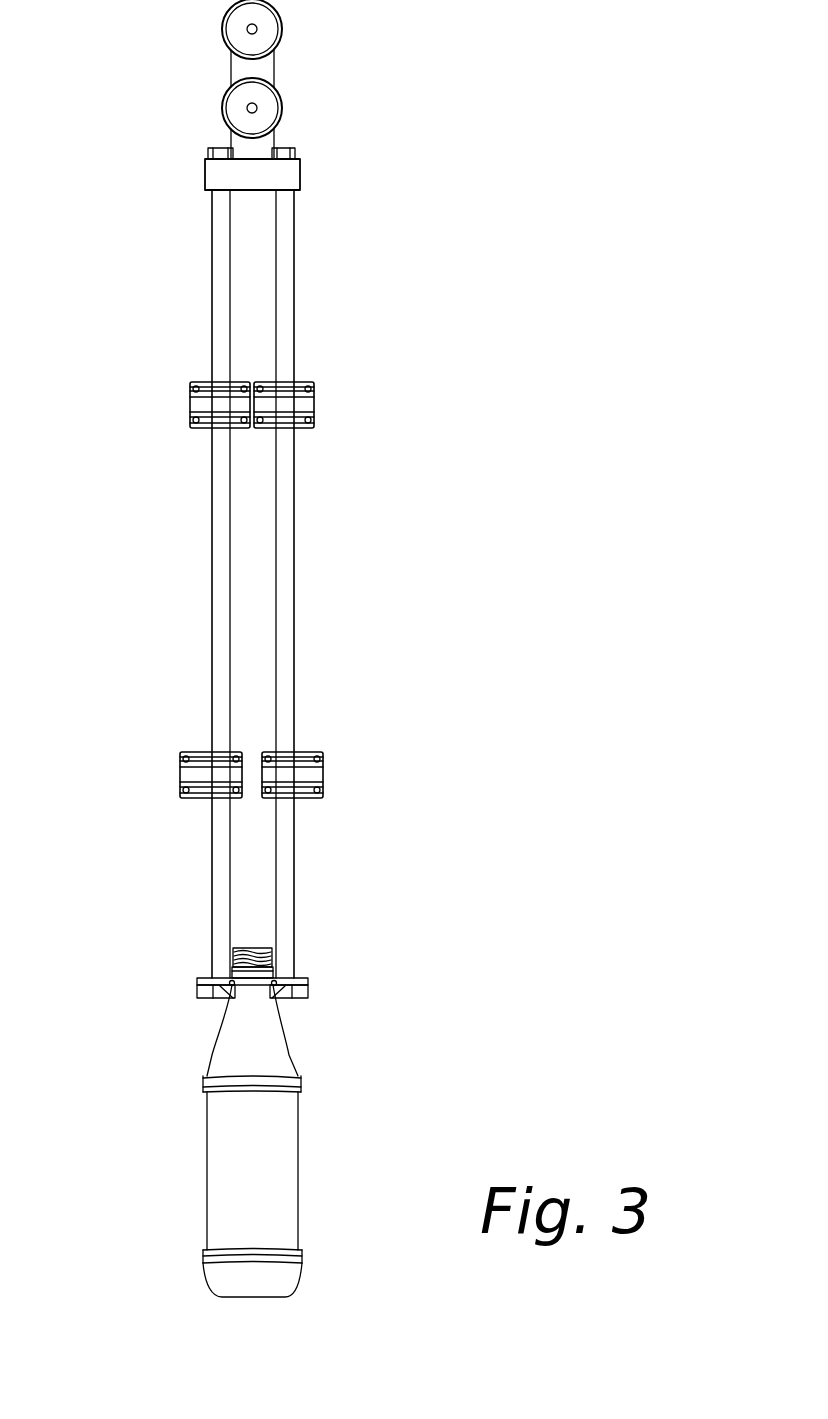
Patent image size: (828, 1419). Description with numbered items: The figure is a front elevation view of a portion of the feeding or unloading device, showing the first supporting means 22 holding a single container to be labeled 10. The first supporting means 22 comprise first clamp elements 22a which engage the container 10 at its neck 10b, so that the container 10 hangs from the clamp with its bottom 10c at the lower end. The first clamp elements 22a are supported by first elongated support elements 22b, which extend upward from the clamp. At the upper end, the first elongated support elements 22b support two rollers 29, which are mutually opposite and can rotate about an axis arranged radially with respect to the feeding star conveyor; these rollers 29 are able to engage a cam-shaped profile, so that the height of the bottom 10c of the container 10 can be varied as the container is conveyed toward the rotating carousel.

The roller 29 is at (240, 31).
The first supporting means 22 is at (261, 575).
The first elongated support element 22b is at (222, 543).
The first clamp element 22a is at (306, 993).
The container to be labeled 10 is at (278, 1153).
The neck 10b is at (252, 985).
The bottom 10c is at (260, 1297).